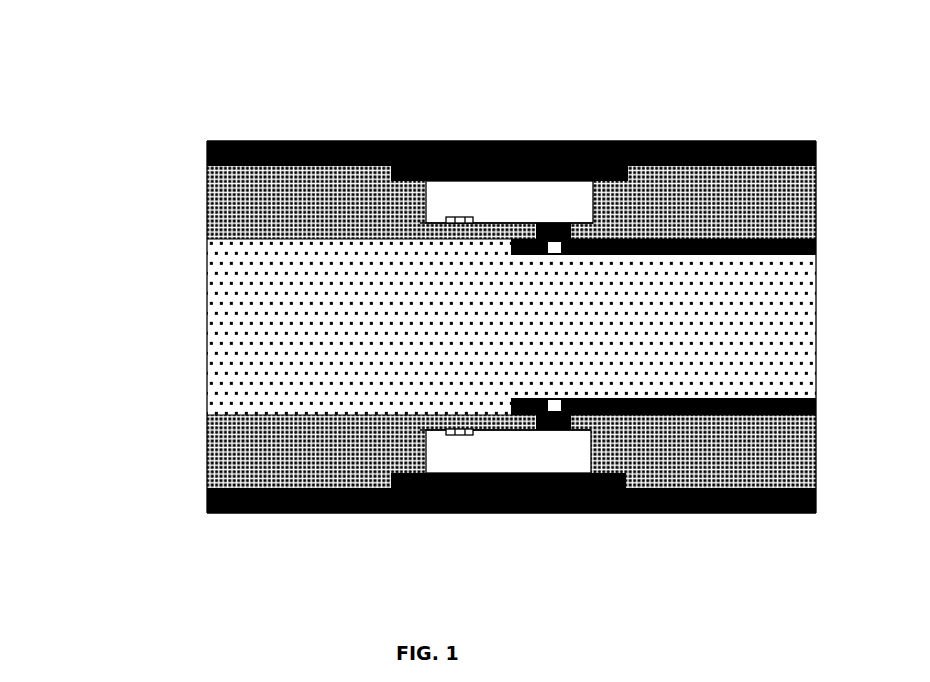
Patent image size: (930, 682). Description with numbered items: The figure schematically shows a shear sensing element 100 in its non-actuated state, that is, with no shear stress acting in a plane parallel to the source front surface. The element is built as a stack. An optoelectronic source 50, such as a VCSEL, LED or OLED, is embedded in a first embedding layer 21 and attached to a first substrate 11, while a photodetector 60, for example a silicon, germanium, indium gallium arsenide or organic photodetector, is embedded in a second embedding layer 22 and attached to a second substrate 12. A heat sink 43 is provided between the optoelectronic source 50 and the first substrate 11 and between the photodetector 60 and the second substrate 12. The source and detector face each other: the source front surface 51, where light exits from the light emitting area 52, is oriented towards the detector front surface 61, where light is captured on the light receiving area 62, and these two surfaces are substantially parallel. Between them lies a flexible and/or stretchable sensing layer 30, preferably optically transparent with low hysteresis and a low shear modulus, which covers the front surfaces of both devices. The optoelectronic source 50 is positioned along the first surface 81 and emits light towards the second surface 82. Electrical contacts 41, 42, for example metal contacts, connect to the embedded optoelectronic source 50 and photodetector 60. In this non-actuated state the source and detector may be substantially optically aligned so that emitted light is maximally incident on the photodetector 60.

The shear sensing element 100 is at (429, 337).
The first substrate 11 is at (267, 138).
The second substrate 12 is at (277, 502).
The first embedding layer 21 is at (222, 190).
The second embedding layer 22 is at (223, 443).
The sensing layer 30 is at (237, 283).
The electrical contact 41 is at (720, 230).
The electrical contact 42 is at (712, 408).
The heat sink 43 is at (550, 158).
The optoelectronic source 50 is at (509, 202).
The source front surface 51 is at (420, 217).
The light emitting area 52 is at (453, 208).
The photodetector 60 is at (508, 451).
The detector front surface 61 is at (423, 421).
The light receiving area 62 is at (455, 428).
The first surface 81 is at (648, 130).
The second surface 82 is at (640, 505).